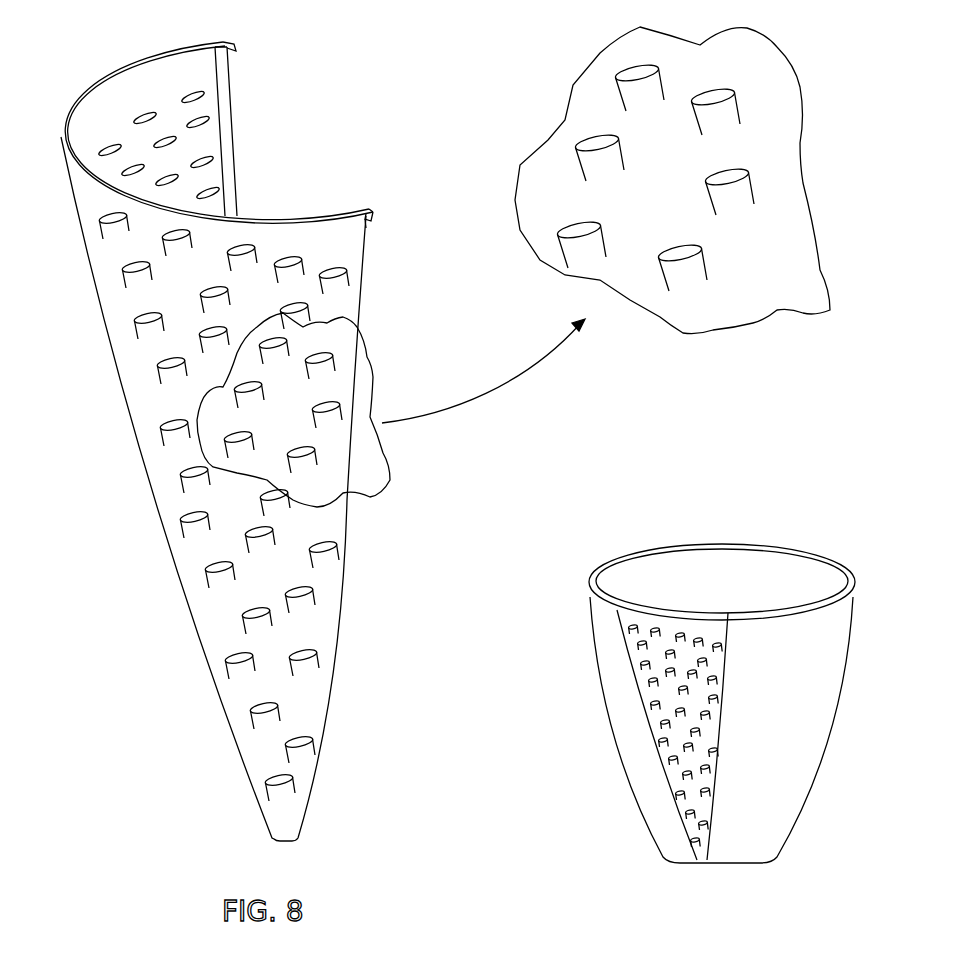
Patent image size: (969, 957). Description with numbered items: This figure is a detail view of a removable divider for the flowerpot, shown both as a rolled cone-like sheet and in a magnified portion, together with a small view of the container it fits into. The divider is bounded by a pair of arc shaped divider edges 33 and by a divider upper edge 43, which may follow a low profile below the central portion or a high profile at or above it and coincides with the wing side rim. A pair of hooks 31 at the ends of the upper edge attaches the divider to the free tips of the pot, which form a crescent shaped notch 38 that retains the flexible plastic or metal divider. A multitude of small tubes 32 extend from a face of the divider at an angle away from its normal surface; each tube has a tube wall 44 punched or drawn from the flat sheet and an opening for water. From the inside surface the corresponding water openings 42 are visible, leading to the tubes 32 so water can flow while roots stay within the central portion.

The hook 31 is at (233, 44).
The tube 32 is at (735, 190).
The divider edge 33 is at (341, 614).
The notch 38 is at (226, 62).
The water opening 42 is at (228, 161).
The divider upper edge 43 is at (80, 101).
The tube wall 44 is at (650, 275).